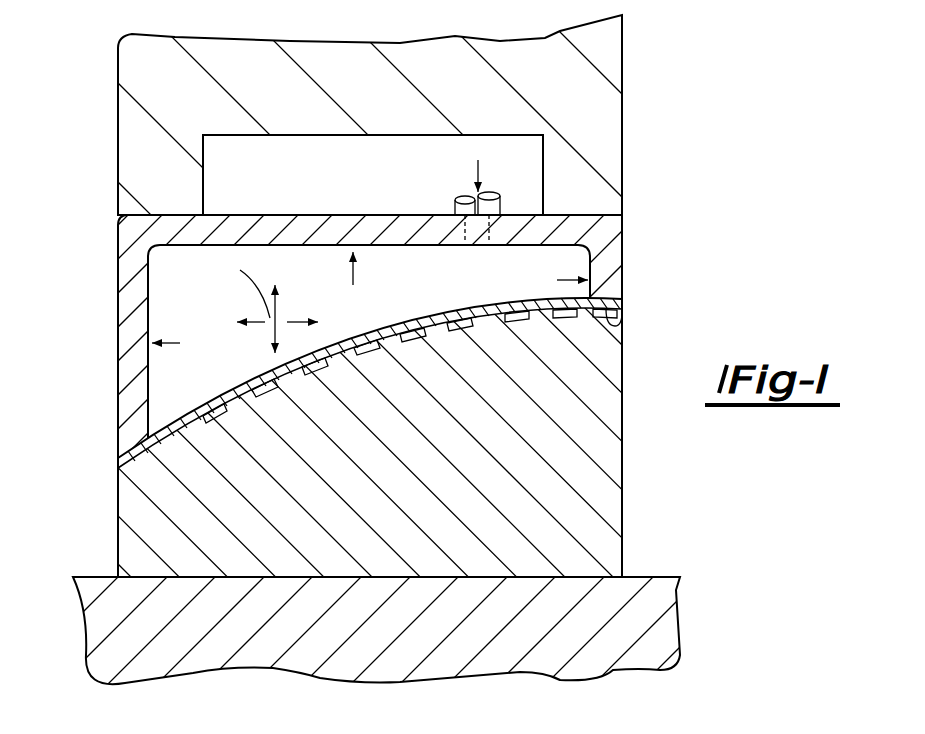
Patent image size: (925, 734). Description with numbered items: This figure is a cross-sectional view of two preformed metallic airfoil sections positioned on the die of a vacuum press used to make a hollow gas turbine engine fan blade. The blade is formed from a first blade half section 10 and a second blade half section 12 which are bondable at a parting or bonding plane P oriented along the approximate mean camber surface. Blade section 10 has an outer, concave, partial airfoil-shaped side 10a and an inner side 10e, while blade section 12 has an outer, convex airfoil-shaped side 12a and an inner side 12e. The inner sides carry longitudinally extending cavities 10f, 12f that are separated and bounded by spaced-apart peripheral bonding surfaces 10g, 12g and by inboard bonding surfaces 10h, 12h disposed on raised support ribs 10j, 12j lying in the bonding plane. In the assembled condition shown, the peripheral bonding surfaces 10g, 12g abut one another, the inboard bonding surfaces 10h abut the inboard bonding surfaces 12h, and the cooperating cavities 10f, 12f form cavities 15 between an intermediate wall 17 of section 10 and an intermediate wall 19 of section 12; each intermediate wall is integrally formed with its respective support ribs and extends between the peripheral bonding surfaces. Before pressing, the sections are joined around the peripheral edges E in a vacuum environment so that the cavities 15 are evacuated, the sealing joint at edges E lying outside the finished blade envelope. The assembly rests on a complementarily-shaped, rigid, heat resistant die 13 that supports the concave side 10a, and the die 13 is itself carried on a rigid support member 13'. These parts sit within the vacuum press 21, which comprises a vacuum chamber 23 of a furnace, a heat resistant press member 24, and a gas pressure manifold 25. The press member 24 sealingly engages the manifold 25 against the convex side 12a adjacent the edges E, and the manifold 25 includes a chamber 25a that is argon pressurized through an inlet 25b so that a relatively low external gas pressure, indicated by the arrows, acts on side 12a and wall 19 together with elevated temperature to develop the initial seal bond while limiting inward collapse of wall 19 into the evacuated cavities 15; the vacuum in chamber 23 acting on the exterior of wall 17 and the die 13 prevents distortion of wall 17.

The first preformed blade half section 10 is at (581, 317).
The outer partial airfoil-shaped side 10a is at (278, 390).
The inner side 10e is at (523, 300).
The cavities 10f is at (362, 354).
The peripheral bonding surfaces 10g is at (252, 400).
The inboard bonding surfaces 10h is at (397, 344).
The raised support ribs 10j is at (303, 375).
The second preformed blade half section 12 is at (583, 295).
The outer partial airfoil-shaped side 12a is at (443, 312).
The inner side 12e is at (259, 383).
The cavities 12f is at (363, 333).
The peripheral bonding surfaces 12g is at (221, 393).
The inboard bonding surfaces 12h is at (340, 338).
The raised support ribs 12j is at (386, 326).
The rigid die 13 is at (462, 425).
The rigid support member 13' is at (462, 367).
The cavities 15 is at (290, 381).
The intermediate wall 17 is at (423, 338).
The intermediate wall 19 is at (416, 318).
The vacuum press 21 is at (640, 142).
The vacuum chamber 23 is at (700, 199).
The heat resistant press member 24 is at (607, 101).
The gas pressure manifold 25 is at (128, 322).
The chamber 25a is at (148, 258).
The inlet 25b is at (455, 200).
The peripheral edges E is at (118, 459).
The parting or bonding plane P is at (213, 418).